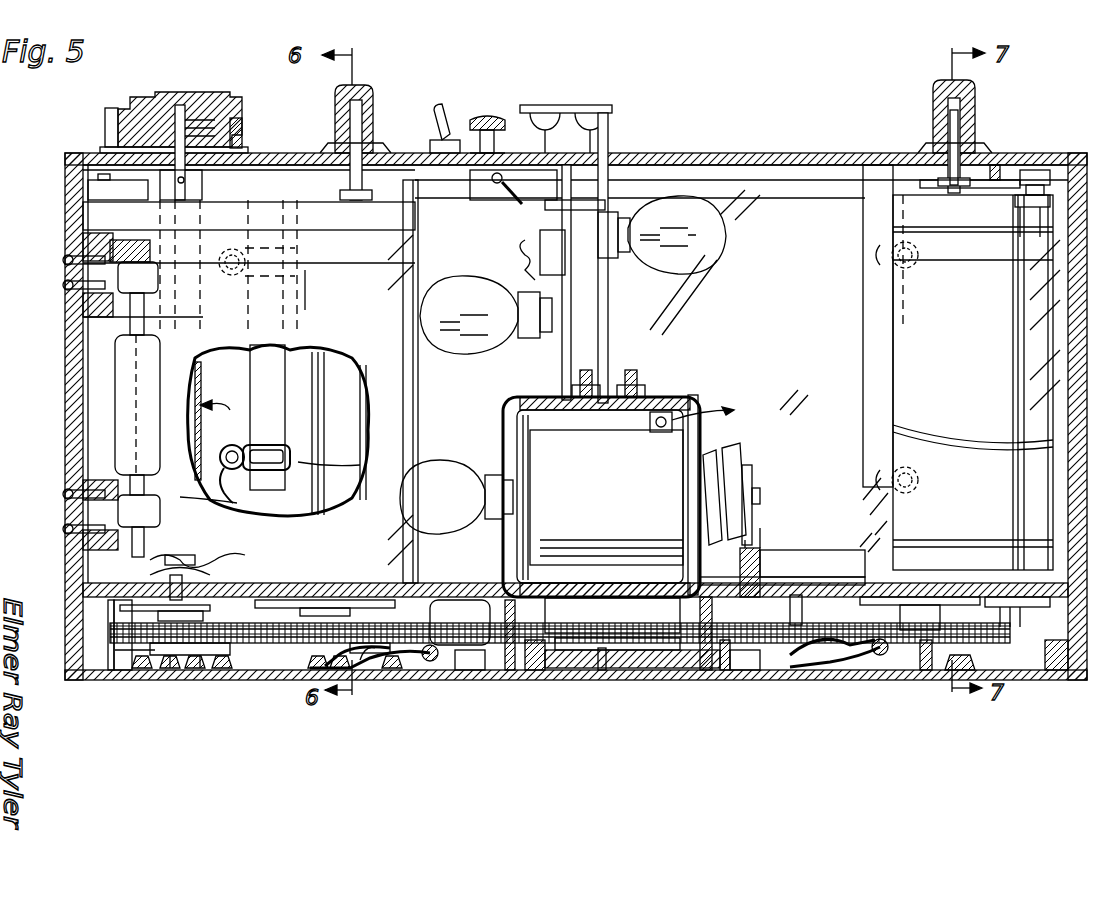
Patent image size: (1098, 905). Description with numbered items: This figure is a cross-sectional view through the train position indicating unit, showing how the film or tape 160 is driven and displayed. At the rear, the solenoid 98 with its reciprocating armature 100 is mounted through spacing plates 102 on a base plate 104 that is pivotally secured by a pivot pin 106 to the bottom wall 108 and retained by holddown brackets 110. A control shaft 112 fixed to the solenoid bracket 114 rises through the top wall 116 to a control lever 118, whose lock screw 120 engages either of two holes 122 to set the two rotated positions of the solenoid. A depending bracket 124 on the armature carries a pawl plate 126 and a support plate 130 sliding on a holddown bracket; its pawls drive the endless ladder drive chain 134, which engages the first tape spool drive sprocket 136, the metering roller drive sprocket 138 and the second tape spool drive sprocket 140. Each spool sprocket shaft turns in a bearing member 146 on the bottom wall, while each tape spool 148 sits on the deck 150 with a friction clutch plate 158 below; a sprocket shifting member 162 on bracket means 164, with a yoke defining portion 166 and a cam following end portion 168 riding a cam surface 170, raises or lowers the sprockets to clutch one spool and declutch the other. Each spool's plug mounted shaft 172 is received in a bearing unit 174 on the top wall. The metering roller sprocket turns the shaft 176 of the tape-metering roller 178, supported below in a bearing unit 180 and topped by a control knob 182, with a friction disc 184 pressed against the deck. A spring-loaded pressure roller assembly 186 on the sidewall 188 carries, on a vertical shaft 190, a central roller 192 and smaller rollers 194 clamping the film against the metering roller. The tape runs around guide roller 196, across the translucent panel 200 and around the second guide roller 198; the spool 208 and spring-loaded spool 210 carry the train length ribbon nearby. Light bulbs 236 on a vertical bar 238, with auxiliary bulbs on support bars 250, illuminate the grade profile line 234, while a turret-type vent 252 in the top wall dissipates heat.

The solenoid 98 is at (705, 450).
The solenoid core or armature 100 is at (747, 494).
The spacing plates 102 is at (535, 650).
The base plate 104 is at (568, 650).
The pivot pin 106 is at (603, 670).
The bottom wall 108 is at (680, 670).
The holddown brackets 110 is at (468, 670).
The control shaft 112 is at (605, 280).
The solenoid bracket 114 is at (700, 385).
The top wall 116 is at (640, 160).
The control lever 118 is at (575, 117).
The lock screw 120 is at (486, 117).
The holes 122 is at (490, 180).
The depending bracket 124 is at (753, 562).
The pawl plate 126 is at (758, 625).
The support plate 130 is at (712, 660).
The ladder drive chain 134 is at (635, 625).
The first tape spool drive sprocket 136 is at (1015, 600).
The metering roller drive sprocket 138 is at (128, 650).
The second tape spool drive sprocket 140 is at (335, 655).
The bearing member 146 is at (340, 665).
The tape spool 148 is at (1020, 180).
The deck 150 is at (90, 590).
The friction clutch plate 158 is at (313, 600).
The film or tape 160 is at (212, 326).
The sprocket shifting member 162 is at (450, 640).
The bracket means 164 is at (410, 665).
The yoke defining portion 166 is at (378, 600).
The cam following end portion 168 is at (478, 640).
The cam surface 170 is at (535, 600).
The plug mounted shaft 172 is at (950, 130).
The bearing unit 174 is at (372, 95).
The shaft 176 is at (180, 575).
The tape-metering roller 178 is at (220, 418).
The bearing unit 180 is at (165, 668).
The control knob 182 is at (192, 100).
The friction disc 184 is at (178, 558).
The spring-loaded pressure roller assembly 186 is at (112, 385).
The sidewall 188 is at (80, 318).
The vertical shaft 190 is at (75, 297).
The central roller 192 is at (150, 370).
The smaller rollers 194 is at (150, 280).
The guide roller 196 is at (95, 190).
The second guide roller 198 is at (1020, 190).
The translucent panel 200 is at (795, 215).
The spool 208 is at (148, 175).
The spring-loaded spool 210 is at (995, 156).
The grade profile line 234 is at (978, 440).
The light bulbs 236 is at (705, 242).
The vertical bar 238 is at (545, 258).
The support bars 250 is at (285, 410).
The turret-type vent 252 is at (603, 115).